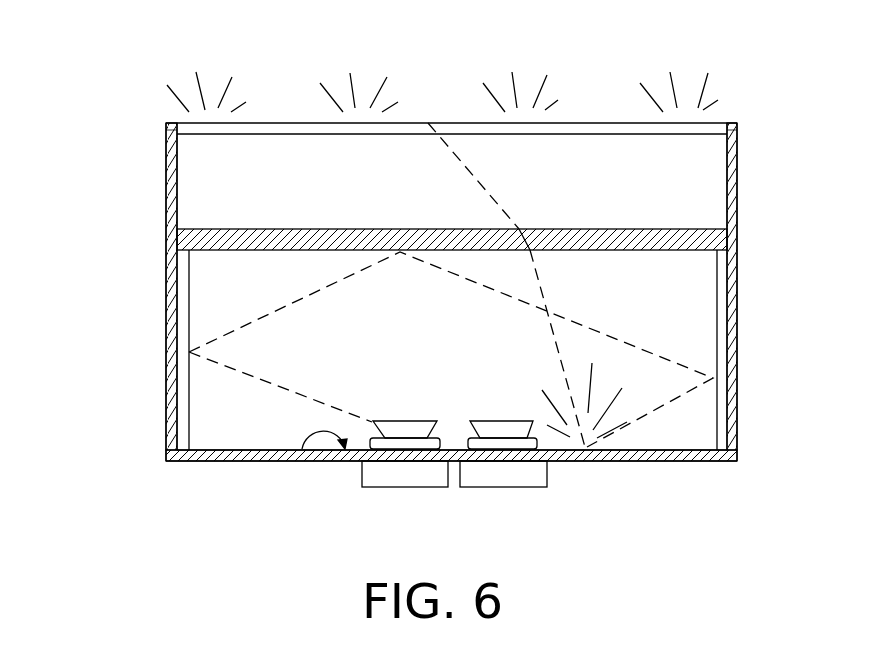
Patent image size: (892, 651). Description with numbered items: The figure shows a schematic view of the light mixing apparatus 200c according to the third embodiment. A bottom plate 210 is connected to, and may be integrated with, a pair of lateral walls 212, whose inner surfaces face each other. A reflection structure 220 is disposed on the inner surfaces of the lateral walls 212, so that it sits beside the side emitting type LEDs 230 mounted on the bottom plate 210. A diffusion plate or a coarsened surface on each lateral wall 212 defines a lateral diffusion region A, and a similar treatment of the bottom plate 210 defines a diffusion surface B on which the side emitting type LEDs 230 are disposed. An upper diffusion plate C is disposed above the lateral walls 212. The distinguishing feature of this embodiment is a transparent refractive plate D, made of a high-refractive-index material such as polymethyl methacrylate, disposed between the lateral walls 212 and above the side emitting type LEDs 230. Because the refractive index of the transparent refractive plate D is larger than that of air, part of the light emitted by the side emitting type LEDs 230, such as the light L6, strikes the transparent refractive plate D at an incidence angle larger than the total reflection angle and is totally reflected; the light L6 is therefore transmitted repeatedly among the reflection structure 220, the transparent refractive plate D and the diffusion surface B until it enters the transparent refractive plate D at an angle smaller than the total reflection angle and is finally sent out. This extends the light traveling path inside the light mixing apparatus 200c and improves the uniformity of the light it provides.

The light mixing apparatus 200c is at (747, 559).
The bottom plate 210 is at (212, 455).
The lateral walls 212 is at (167, 182).
The reflection structure 220 is at (180, 335).
The side emitting type LEDs 230 is at (497, 480).
The lateral diffusion region A is at (179, 157).
The diffusion surface B is at (300, 455).
The upper diffusion plate C is at (597, 127).
The transparent refractive plate D is at (702, 230).
The light L6 is at (257, 375).